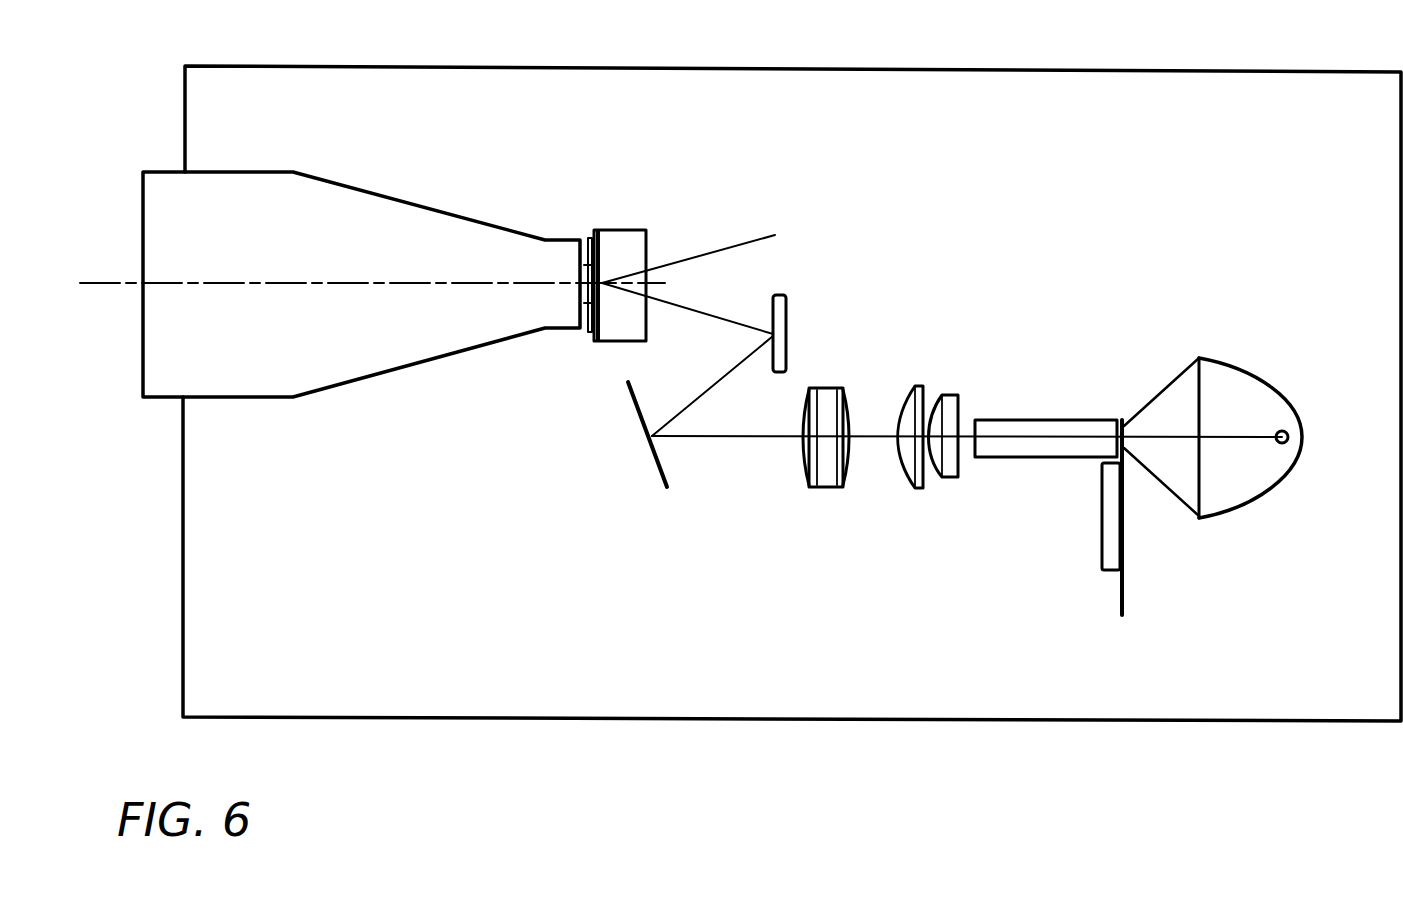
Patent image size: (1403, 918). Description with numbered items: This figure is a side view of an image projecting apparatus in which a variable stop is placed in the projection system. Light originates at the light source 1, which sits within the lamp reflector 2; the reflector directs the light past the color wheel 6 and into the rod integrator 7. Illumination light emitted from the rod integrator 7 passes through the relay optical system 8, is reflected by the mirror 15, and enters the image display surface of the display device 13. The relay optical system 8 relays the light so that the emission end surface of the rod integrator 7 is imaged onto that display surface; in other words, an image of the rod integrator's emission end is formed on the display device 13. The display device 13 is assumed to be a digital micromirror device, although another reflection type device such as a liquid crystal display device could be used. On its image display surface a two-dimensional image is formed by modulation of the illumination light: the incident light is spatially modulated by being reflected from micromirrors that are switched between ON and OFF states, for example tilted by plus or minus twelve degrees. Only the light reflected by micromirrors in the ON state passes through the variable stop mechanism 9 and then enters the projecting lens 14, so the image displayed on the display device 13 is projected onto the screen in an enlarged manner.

The light source 1 is at (1288, 430).
The lamp reflector 2 is at (1247, 372).
The color wheel 6 is at (1128, 540).
The rod integrator 7 is at (1052, 420).
The relay optical system 8 is at (968, 492).
The variable stop mechanism 9 is at (620, 228).
The display device 13 is at (787, 311).
The projecting lens 14 is at (467, 217).
The mirror 15 is at (660, 467).